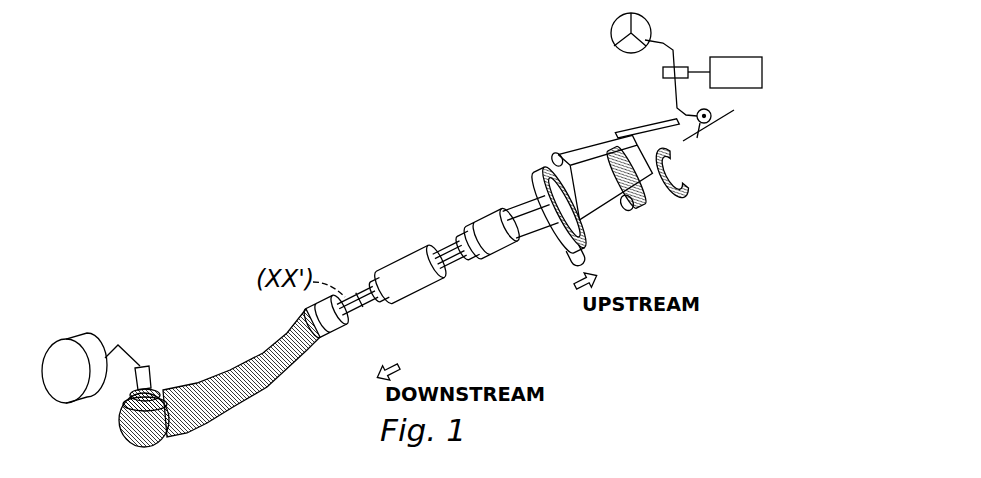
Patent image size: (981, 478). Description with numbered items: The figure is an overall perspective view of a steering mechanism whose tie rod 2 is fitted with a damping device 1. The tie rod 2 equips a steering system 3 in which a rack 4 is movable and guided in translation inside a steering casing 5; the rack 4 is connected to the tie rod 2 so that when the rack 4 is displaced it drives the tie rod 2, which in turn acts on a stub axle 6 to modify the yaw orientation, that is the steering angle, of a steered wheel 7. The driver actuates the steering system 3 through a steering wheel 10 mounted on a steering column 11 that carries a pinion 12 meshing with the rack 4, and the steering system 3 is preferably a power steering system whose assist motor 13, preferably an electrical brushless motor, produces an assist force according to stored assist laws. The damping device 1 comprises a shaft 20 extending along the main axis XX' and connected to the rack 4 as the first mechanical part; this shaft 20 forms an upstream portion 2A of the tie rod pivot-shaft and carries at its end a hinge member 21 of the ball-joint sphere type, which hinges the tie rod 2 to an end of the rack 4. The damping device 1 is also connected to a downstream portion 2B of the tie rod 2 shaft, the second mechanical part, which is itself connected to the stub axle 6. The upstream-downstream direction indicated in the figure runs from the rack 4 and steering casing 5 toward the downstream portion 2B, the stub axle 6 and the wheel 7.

The damping device 1 is at (405, 250).
The tie rod 2 is at (359, 315).
The upstream portion of the tie rod shaft 2A is at (445, 233).
The downstream portion of the tie rod shaft 2B is at (383, 265).
The steering system 3 is at (490, 148).
The rack 4 is at (523, 224).
The steering casing 5 is at (598, 207).
The stub axle 6 is at (137, 362).
The steered wheel 7 is at (77, 337).
The steering wheel 10 is at (611, 33).
The steering column 11 is at (663, 42).
The pinion 12 is at (697, 117).
The assist motor 13 is at (740, 70).
The shaft 20 is at (455, 262).
The hinge member 21 is at (470, 252).